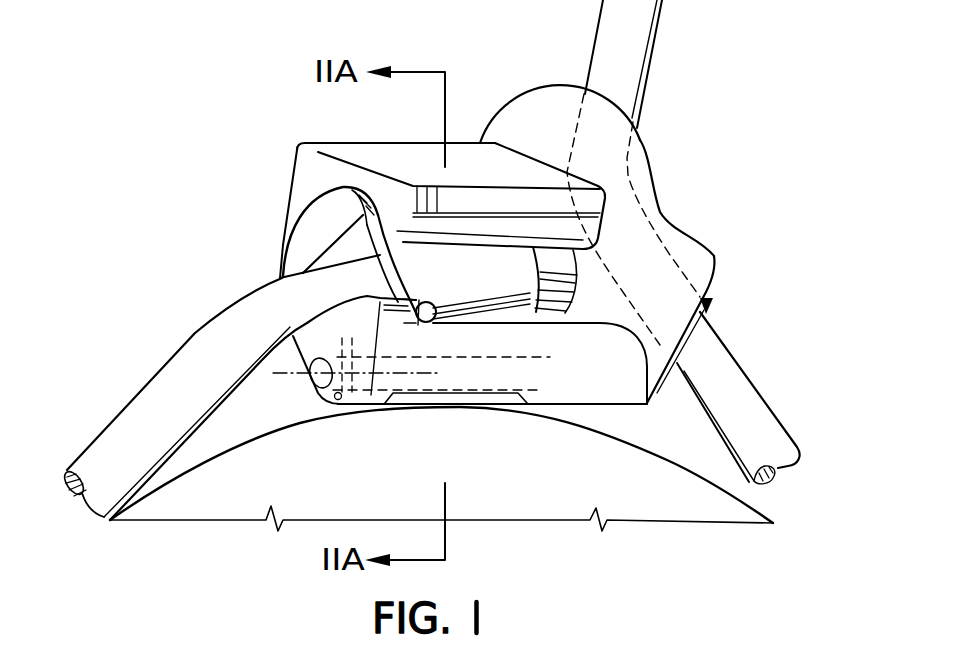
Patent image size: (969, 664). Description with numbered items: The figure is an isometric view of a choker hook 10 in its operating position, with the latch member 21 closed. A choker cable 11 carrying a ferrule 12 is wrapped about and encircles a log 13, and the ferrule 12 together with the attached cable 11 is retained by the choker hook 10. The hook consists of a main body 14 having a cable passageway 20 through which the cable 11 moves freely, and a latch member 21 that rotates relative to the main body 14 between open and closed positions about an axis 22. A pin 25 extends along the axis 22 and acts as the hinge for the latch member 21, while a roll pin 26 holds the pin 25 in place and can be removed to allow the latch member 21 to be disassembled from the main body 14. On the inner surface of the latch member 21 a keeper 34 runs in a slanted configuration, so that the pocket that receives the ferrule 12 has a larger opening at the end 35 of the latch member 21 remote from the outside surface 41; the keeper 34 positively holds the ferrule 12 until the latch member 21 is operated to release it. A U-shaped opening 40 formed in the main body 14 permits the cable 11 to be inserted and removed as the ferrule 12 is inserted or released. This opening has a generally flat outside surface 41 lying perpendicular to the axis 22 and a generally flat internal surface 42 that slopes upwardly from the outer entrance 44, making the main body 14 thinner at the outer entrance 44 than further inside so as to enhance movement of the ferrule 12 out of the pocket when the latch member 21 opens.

The choker hook 10 is at (502, 62).
The choker cable 11 is at (642, 60).
The ferrule 12 is at (540, 272).
The log 13 is at (670, 462).
The main body 14 is at (692, 238).
The cable passageway 20 is at (655, 188).
The latch member 21 is at (442, 192).
The axis 22 is at (296, 373).
The pin 25 is at (547, 388).
The roll pin 26 is at (340, 400).
The keeper 34 is at (507, 230).
The end 35 is at (603, 228).
The U-shaped opening 40 is at (350, 252).
The outside surface 41 is at (312, 223).
The internal surface 42 is at (418, 325).
The outer entrance 44 is at (413, 308).